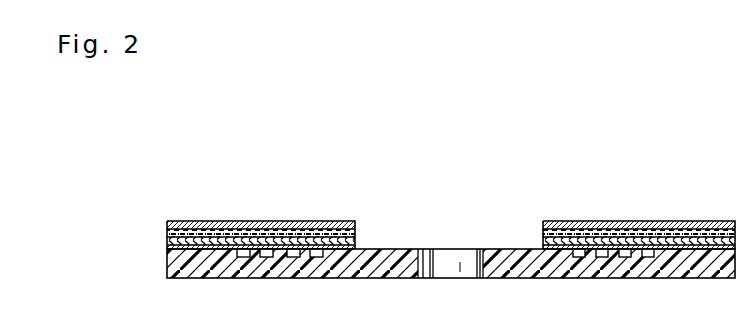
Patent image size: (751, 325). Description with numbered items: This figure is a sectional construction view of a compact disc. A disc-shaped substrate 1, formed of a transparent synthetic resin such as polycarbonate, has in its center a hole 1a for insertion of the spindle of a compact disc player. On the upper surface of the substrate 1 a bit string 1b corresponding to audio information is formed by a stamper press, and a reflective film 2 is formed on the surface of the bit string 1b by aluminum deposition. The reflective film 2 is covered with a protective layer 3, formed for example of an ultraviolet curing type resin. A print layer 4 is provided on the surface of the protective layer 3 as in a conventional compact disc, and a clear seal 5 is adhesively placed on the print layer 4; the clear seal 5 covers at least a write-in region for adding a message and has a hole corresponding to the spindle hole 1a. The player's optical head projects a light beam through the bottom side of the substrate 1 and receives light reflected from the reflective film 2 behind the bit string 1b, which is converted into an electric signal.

The substrate 1 is at (176, 265).
The hole 1a is at (450, 258).
The bit string 1b is at (284, 256).
The reflective film 2 is at (166, 247).
The protective layer 3 is at (166, 238).
The print layer 4 is at (166, 231).
The clear seal 5 is at (193, 223).